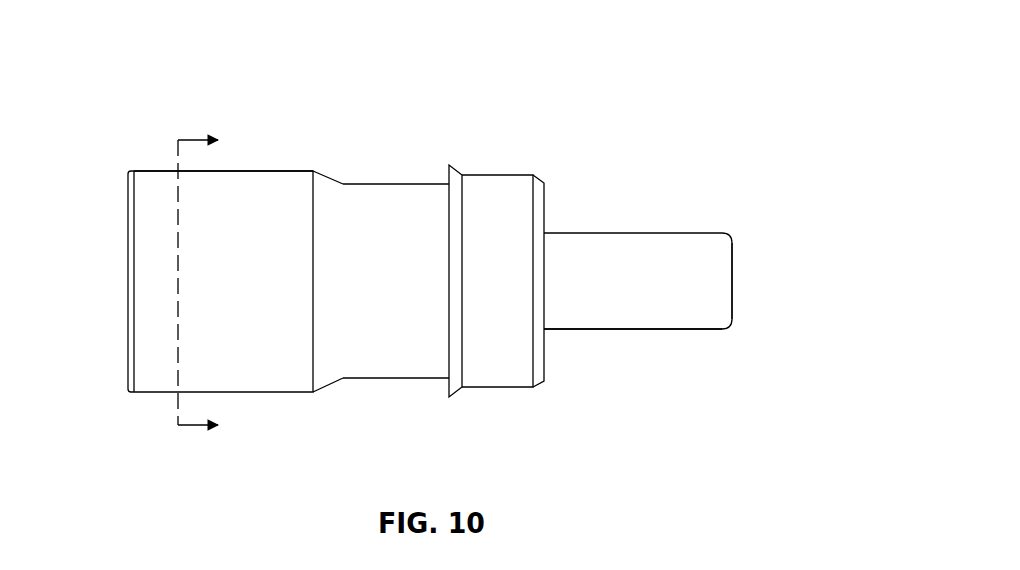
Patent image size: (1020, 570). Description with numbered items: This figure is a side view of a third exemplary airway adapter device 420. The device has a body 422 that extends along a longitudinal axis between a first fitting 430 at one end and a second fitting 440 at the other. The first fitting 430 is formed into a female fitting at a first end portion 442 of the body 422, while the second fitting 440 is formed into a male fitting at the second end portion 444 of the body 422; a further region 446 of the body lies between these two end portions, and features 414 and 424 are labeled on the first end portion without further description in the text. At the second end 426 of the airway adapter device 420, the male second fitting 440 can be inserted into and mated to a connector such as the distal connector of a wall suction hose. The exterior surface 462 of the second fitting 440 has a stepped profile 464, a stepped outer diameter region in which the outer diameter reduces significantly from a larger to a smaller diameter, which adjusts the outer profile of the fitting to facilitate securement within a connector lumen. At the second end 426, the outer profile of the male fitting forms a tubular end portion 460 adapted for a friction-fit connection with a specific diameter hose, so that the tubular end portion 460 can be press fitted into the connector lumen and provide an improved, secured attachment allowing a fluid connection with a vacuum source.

The airway adapter device 420 is at (746, 34).
The first end portion 442 is at (343, 184).
The second section 446 is at (534, 175).
The second end portion 444 is at (732, 233).
The outer surface 414 is at (145, 171).
The end face 424 is at (127, 282).
The first fitting 430 is at (143, 408).
The body 422 is at (395, 380).
The stepped profile 464 is at (541, 193).
The second fitting 440 is at (639, 224).
The second end 426 is at (733, 280).
The tubular end portion 460 is at (682, 315).
The exterior surface 462 is at (620, 330).